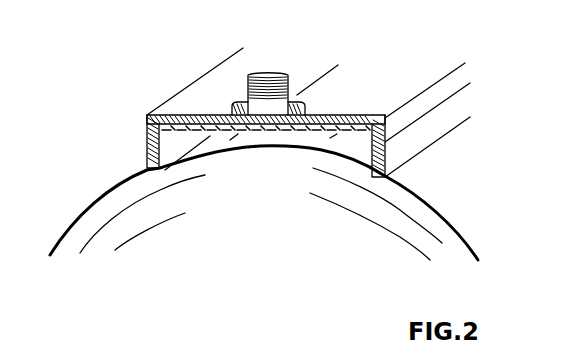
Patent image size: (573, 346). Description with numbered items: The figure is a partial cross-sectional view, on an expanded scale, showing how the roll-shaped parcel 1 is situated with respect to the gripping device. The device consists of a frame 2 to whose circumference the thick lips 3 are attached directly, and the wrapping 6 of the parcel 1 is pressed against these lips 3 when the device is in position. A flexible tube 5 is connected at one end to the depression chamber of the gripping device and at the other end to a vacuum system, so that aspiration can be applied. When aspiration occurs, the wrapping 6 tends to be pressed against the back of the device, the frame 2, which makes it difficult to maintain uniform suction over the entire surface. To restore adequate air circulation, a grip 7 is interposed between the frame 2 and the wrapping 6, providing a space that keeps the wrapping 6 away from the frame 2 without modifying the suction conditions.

The roll-shaped parcel 1 is at (463, 208).
The frame 2 is at (147, 126).
The lips 3 is at (147, 157).
The flexible tube 5 is at (247, 90).
The wrapping 6 is at (260, 147).
The grip 7 is at (328, 132).